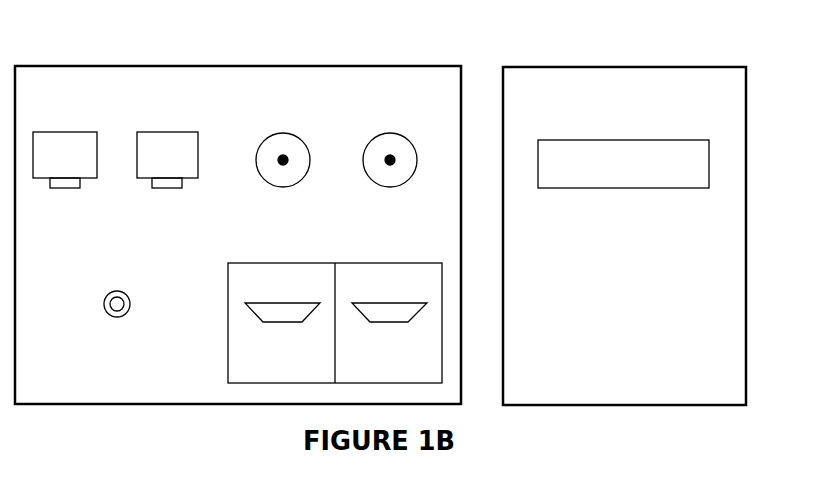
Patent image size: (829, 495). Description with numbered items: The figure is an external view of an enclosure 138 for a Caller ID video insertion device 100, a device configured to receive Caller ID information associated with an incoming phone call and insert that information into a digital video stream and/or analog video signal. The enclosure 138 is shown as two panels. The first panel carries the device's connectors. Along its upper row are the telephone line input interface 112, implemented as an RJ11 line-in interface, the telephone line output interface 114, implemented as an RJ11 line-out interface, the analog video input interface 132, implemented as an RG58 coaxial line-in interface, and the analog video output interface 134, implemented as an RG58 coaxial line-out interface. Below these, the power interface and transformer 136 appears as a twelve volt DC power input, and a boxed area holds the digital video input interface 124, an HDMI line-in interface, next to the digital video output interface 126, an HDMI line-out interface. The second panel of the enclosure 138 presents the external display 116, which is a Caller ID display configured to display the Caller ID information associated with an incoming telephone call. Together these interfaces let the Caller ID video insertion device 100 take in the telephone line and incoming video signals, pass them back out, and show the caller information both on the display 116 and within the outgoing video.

The Caller ID video insertion device 100 is at (480, 43).
The telephone line input interface 112 is at (63, 189).
The telephone line output interface 114 is at (165, 189).
The external display 116 is at (623, 140).
The digital video input interface 124 is at (280, 302).
The digital video output interface 126 is at (388, 302).
The analog video input interface 132 is at (283, 187).
The analog video output interface 134 is at (390, 187).
The power interface and transformer 136 is at (123, 291).
The enclosure 138 is at (238, 406).